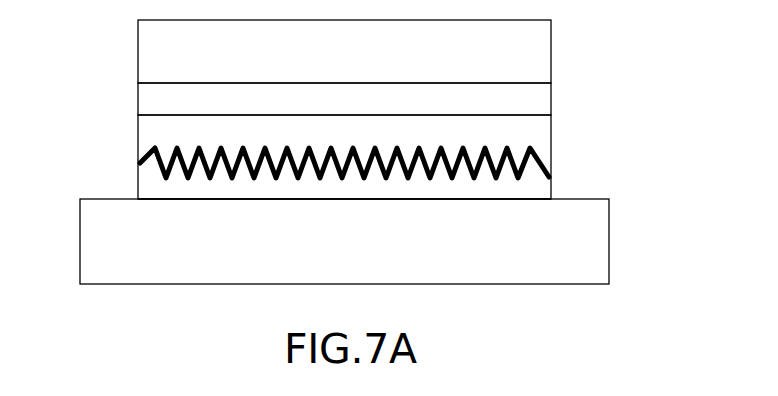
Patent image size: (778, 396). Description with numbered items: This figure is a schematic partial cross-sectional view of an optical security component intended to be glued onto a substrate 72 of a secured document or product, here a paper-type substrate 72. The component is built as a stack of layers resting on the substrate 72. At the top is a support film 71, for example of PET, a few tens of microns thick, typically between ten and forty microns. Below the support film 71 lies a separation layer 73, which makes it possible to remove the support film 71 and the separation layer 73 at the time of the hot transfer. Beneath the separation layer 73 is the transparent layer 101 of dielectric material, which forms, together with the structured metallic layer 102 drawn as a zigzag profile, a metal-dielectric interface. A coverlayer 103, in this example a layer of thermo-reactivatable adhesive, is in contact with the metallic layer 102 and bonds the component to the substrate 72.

The support film 71 is at (537, 50).
The separation layer 73 is at (531, 106).
The substrate 72 is at (593, 250).
The transparent layer of dielectric material 101 is at (153, 127).
The structured metallic layer 102 is at (153, 161).
The coverlayer 103 is at (153, 191).